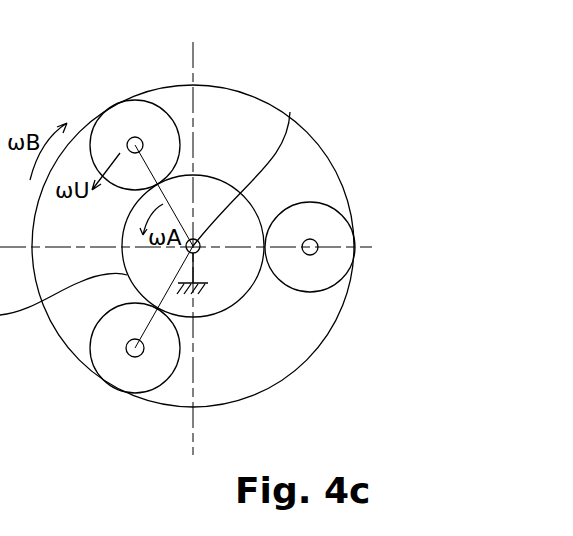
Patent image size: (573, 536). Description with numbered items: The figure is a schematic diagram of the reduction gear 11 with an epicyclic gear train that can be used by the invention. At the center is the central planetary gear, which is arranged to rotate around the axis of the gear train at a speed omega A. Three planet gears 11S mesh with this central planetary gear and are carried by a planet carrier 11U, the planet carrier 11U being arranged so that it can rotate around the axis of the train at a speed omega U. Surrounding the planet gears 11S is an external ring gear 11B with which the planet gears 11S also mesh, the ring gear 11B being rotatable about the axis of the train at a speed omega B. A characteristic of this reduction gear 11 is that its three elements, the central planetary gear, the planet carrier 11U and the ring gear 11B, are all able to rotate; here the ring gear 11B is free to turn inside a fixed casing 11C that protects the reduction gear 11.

The reduction gear 11 is at (158, 70).
The external ring gear 11B is at (243, 107).
The planet carrier 11U is at (289, 113).
The planet gears 11S is at (90, 337).
The fixed casing 11C is at (203, 292).